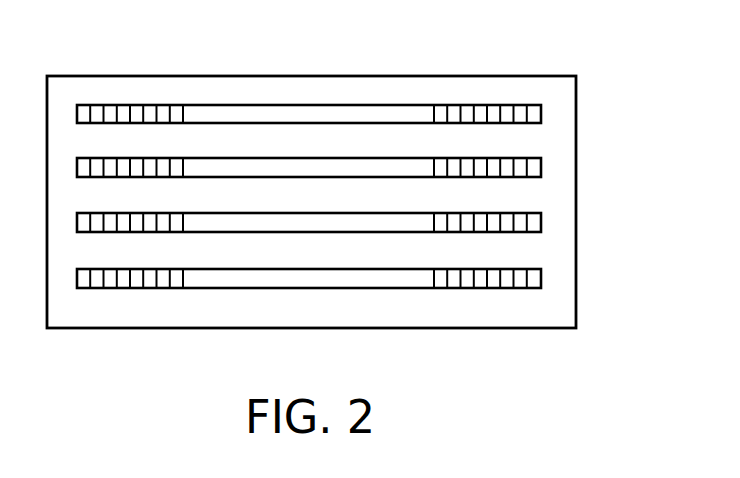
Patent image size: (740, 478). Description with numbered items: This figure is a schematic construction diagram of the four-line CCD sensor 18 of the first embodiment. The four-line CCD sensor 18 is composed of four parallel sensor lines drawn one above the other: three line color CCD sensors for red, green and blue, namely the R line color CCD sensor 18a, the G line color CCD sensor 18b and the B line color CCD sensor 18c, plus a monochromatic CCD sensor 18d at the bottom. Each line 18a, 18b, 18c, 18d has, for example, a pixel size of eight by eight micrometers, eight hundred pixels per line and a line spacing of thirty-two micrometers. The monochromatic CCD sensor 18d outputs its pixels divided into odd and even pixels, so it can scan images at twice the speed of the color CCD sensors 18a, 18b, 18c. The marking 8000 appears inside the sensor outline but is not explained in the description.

The 4-line CCD sensor 18 is at (238, 76).
The R (Red) line color CCD sensor 18a is at (534, 112).
The G (Green) line color CCD sensor 18b is at (542, 166).
The B (Blue) line color CCD sensor 18c is at (542, 222).
The monochromatic CCD sensor 18d is at (542, 278).
The substrate marking 8000 is at (533, 315).